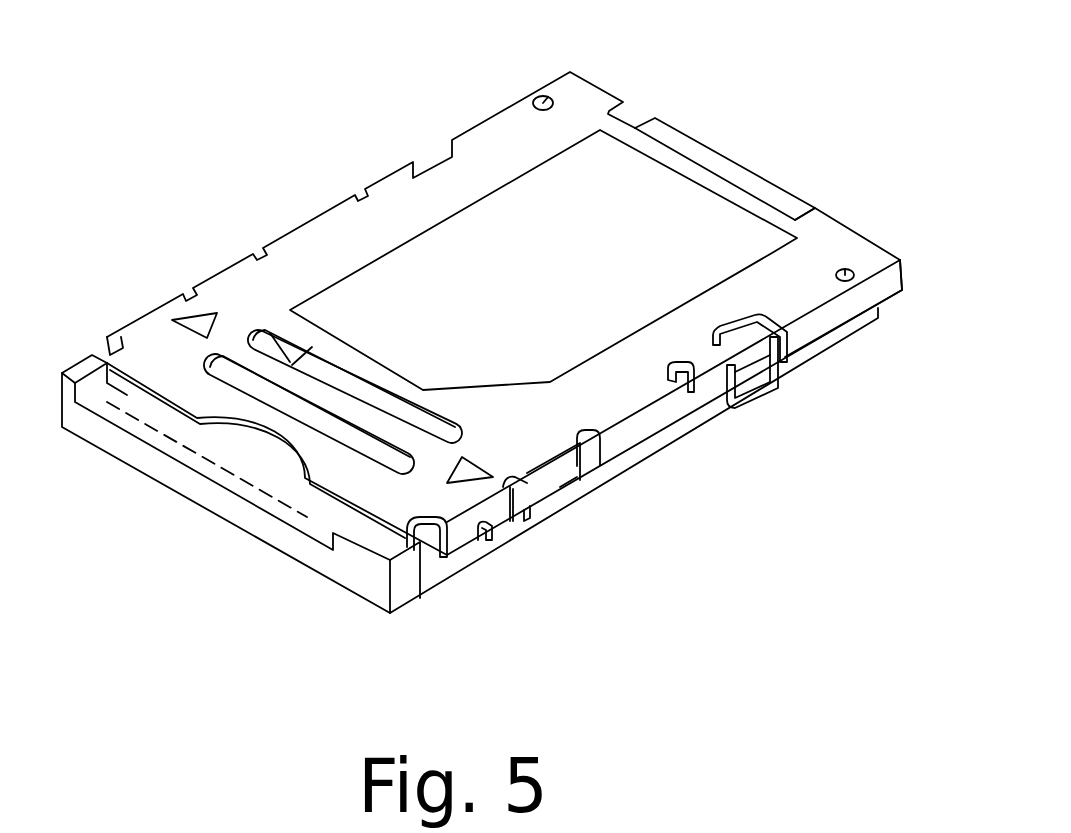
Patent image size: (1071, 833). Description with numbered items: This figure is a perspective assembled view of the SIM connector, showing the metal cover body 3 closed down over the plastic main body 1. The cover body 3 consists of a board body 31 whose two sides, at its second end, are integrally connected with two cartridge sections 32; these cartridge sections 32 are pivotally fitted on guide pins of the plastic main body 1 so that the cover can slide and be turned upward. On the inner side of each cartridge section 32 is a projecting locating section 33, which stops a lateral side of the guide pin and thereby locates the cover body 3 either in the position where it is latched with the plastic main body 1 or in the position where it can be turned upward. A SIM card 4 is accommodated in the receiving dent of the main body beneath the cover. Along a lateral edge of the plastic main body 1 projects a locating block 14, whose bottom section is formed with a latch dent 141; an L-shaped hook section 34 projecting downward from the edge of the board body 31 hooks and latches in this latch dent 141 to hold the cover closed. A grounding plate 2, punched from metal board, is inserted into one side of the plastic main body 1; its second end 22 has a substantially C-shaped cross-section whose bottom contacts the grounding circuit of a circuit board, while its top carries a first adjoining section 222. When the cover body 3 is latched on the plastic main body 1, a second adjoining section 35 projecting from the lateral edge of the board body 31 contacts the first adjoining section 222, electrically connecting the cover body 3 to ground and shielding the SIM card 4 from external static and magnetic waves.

The plastic main body 1 is at (243, 517).
The grounding plate 2 is at (776, 433).
The cover body 3 is at (370, 232).
The SIM card 4 is at (203, 463).
The locating block 14 is at (540, 502).
The latch dent 141 is at (527, 540).
The second end 22 is at (757, 387).
The first adjoining section 222 is at (835, 322).
The board body 31 is at (642, 198).
The cartridge section 32 is at (483, 118).
The projecting locating section 33 is at (552, 93).
The L-shaped hook section 34 is at (493, 540).
The second adjoining section 35 is at (700, 395).